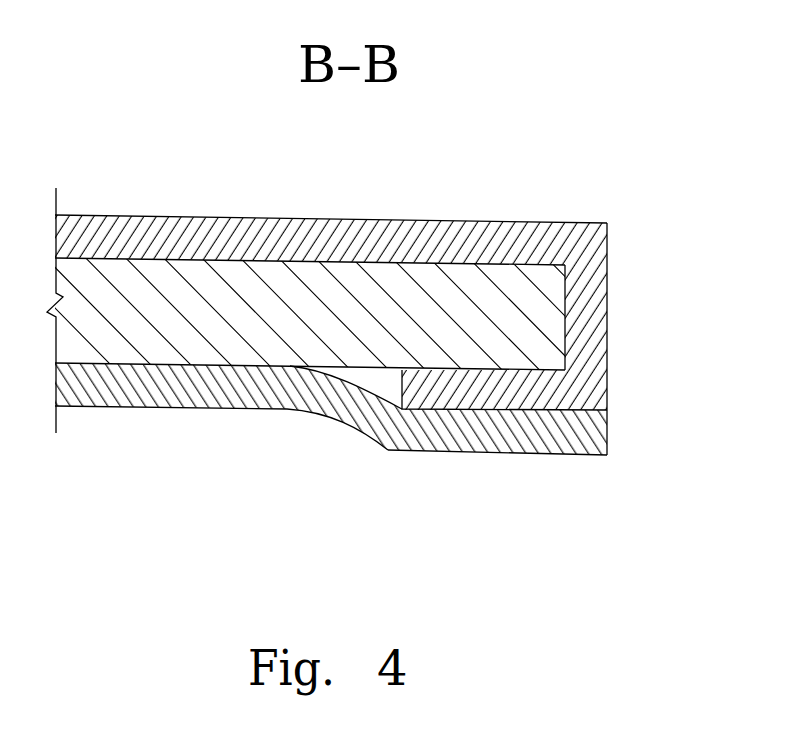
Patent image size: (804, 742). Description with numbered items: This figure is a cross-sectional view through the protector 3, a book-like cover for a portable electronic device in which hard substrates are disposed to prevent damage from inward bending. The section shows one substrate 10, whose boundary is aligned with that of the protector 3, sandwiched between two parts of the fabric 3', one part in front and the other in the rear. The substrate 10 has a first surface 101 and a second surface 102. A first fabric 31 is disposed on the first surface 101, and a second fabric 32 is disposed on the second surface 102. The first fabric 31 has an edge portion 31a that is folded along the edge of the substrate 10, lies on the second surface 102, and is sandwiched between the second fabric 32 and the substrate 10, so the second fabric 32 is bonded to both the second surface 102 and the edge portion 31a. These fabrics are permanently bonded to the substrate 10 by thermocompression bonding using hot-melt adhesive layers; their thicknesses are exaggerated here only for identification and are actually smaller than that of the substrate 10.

The protector 3 is at (648, 339).
The fabric 3' is at (221, 493).
The substrate 10 is at (137, 292).
The first surface 101 is at (258, 254).
The second surface 102 is at (134, 363).
The first fabric 31 is at (477, 241).
The edge portion 31a is at (522, 390).
The second fabric 32 is at (402, 430).